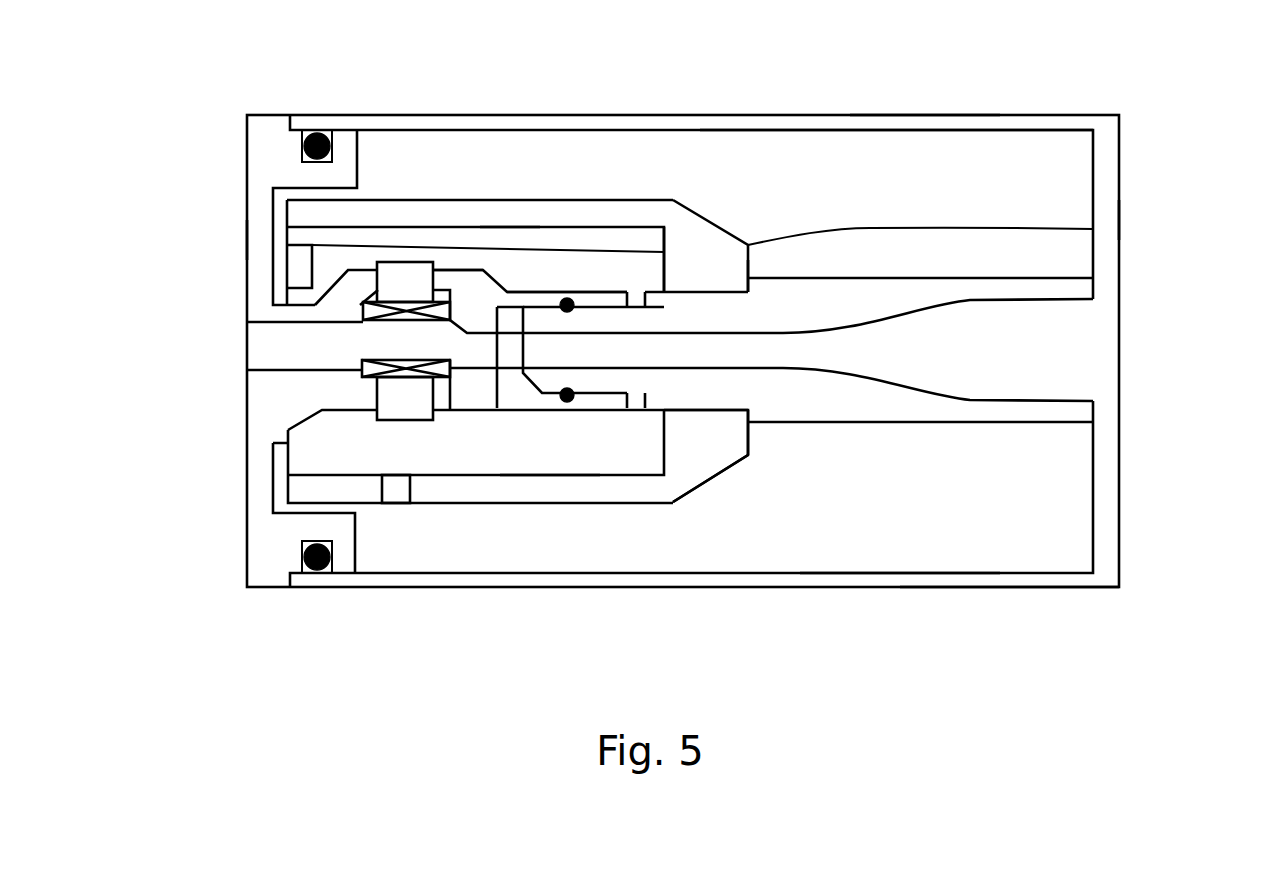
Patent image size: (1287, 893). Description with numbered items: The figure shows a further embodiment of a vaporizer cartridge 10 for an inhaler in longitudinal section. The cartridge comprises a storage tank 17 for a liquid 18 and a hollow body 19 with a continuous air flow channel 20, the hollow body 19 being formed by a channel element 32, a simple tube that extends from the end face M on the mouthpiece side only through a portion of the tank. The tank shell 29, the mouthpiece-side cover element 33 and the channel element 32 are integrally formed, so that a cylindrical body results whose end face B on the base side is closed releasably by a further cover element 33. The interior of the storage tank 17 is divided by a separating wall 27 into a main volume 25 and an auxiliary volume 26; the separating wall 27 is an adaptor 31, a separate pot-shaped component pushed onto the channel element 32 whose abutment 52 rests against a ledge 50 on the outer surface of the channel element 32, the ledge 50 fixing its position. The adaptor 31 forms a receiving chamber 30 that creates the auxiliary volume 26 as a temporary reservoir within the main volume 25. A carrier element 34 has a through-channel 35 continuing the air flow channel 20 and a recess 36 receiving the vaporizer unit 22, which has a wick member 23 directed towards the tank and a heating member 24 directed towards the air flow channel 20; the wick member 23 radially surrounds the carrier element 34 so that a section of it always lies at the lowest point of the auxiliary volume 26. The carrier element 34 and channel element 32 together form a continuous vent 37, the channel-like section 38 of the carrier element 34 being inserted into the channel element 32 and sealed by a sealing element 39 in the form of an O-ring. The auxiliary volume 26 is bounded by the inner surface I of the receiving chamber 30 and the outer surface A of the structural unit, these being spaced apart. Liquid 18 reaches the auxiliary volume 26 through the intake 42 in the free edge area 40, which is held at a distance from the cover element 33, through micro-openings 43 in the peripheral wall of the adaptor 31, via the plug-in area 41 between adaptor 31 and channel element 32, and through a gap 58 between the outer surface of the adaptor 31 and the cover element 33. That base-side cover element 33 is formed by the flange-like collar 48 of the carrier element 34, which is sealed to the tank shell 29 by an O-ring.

The vaporizer cartridge 10 is at (1117, 638).
The storage tank 17 is at (743, 153).
The liquid 18 is at (565, 302).
The hollow body 19 is at (962, 432).
The air flow channel 20 is at (882, 375).
The vaporizer unit 22 is at (430, 432).
The wick member 23 is at (388, 395).
The heating member 24 is at (363, 365).
The main volume 25 is at (857, 177).
The auxiliary volume 26 is at (467, 238).
The separating wall 27 is at (368, 200).
The tank shell 29 is at (915, 122).
The receiving chamber 30 is at (603, 450).
The adaptor 31 is at (688, 500).
The channel element 32 is at (1027, 291).
The cover element 33 is at (243, 180).
The carrier element 34 is at (362, 303).
The through-channel 35 is at (452, 347).
The recess 36 is at (438, 290).
The continuous vent 37 is at (1052, 357).
The channel-like section 38 is at (620, 297).
The sealing element 39 is at (587, 262).
The free edge area 40 is at (285, 452).
The plug-in area 41 is at (757, 432).
The intake 42 is at (297, 264).
The micro-openings 43 is at (393, 490).
The flange-like collar 48 is at (245, 515).
The ledge 50 is at (750, 283).
The abutment 52 is at (755, 262).
The gap 58 is at (283, 186).
The outer surface A is at (440, 272).
The end face on the base side B is at (125, 243).
The inner surface I is at (510, 227).
The end face on the mouthpiece side M is at (1193, 217).